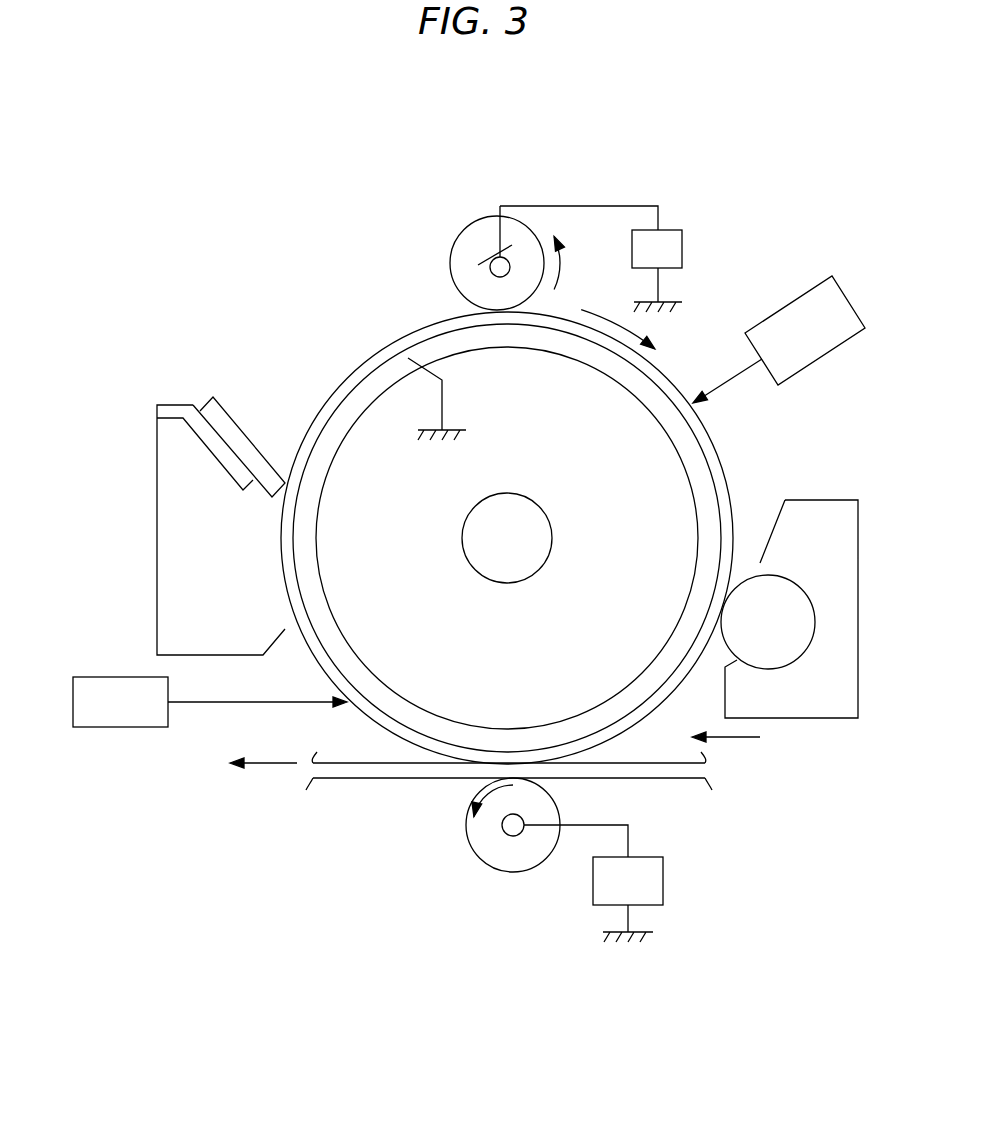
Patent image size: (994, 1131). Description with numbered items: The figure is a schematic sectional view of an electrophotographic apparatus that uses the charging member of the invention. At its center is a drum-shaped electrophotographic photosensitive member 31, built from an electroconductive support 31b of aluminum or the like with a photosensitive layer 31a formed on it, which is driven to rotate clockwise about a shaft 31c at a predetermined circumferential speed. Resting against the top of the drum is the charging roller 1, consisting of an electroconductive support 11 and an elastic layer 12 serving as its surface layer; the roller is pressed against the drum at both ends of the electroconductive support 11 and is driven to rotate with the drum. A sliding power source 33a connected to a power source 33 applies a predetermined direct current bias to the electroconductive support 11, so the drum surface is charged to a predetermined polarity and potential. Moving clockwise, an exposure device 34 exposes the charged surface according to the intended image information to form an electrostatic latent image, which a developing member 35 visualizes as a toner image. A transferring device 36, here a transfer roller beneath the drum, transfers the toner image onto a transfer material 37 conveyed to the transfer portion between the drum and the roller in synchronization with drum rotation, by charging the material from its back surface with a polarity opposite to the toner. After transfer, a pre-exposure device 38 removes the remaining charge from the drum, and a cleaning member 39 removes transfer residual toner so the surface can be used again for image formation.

The charging roller 1 is at (382, 297).
The electroconductive support 11 is at (489, 259).
The elastic layer 12 is at (476, 253).
The electrophotographic photosensitive member 31 is at (465, 525).
The photosensitive layer 31a is at (365, 358).
The electroconductive support 31b is at (366, 404).
The shaft 31c is at (510, 570).
The power source 33 is at (672, 230).
The sliding power source 33a is at (486, 248).
The exposure device 34 is at (833, 313).
The developing member 35 is at (800, 525).
The transferring device 36 is at (472, 832).
The transfer material 37 is at (333, 781).
The pre-exposure device 38 is at (132, 710).
The cleaning member 39 is at (175, 555).